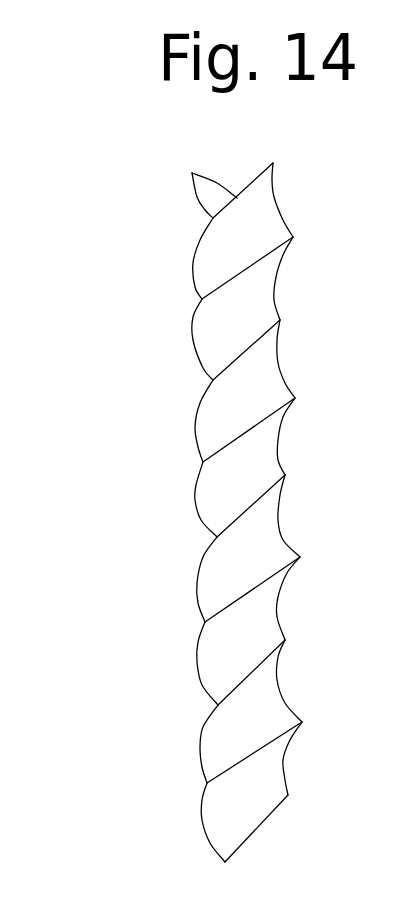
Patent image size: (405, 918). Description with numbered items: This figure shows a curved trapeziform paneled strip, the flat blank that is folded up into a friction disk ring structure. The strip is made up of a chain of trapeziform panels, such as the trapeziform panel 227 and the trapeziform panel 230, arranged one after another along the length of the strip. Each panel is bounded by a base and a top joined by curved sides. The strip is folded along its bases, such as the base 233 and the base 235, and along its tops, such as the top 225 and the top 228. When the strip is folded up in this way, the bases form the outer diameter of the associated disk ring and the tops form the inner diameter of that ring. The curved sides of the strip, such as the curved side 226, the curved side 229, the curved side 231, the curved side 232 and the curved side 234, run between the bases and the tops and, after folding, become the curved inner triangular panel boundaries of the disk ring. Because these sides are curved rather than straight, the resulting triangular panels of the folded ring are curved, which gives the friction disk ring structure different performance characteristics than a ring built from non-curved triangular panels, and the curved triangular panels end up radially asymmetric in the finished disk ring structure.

The top 225 is at (192, 173).
The curved side 226 is at (192, 270).
The trapeziform panel 227 is at (218, 332).
The top 228 is at (235, 520).
The curved side 229 is at (197, 578).
The trapeziform panel 230 is at (230, 648).
The curved side 231 is at (273, 193).
The curved side 232 is at (280, 363).
The base 233 is at (243, 433).
The curved side 234 is at (282, 522).
The base 235 is at (250, 755).